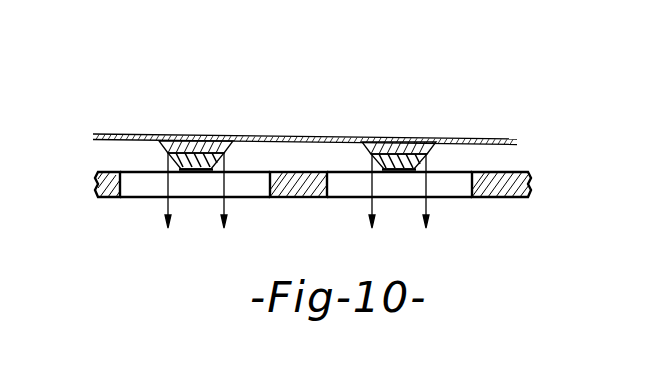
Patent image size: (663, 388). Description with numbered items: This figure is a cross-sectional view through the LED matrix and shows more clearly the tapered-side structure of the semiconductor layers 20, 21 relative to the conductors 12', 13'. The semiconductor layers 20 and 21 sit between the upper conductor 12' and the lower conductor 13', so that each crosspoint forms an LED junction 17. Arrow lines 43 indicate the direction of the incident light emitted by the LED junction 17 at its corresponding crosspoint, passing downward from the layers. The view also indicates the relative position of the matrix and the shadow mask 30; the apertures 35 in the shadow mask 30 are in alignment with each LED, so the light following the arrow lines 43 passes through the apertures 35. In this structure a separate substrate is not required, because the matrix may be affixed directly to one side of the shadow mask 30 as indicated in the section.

The conductor 12' is at (305, 118).
The LED junction 17 is at (166, 151).
The semiconductor layer 21 is at (222, 164).
The semiconductor layer 20 is at (405, 149).
The shadow mask 30 is at (531, 188).
The conductor 13' is at (195, 222).
The aperture 35 is at (450, 178).
The arrow lines 43 is at (428, 222).